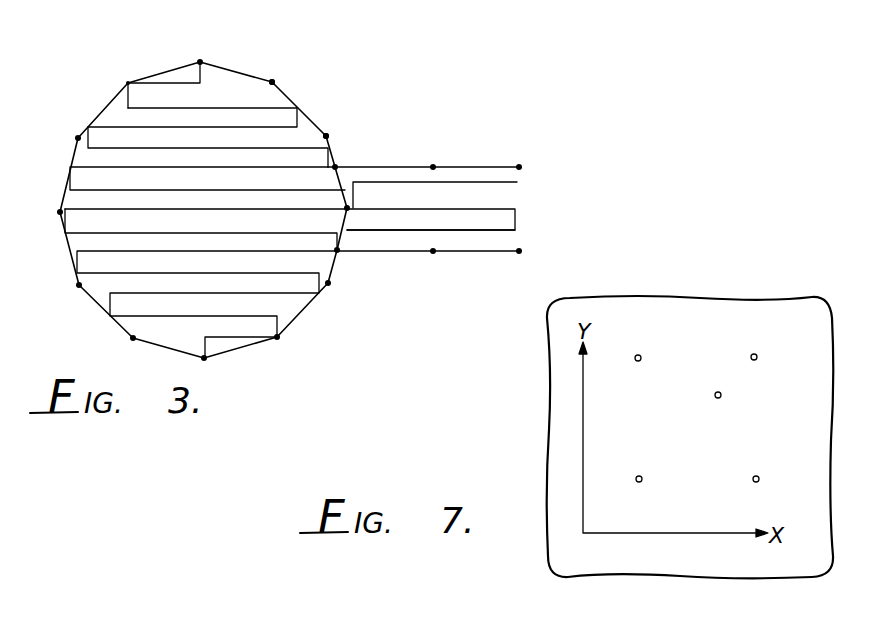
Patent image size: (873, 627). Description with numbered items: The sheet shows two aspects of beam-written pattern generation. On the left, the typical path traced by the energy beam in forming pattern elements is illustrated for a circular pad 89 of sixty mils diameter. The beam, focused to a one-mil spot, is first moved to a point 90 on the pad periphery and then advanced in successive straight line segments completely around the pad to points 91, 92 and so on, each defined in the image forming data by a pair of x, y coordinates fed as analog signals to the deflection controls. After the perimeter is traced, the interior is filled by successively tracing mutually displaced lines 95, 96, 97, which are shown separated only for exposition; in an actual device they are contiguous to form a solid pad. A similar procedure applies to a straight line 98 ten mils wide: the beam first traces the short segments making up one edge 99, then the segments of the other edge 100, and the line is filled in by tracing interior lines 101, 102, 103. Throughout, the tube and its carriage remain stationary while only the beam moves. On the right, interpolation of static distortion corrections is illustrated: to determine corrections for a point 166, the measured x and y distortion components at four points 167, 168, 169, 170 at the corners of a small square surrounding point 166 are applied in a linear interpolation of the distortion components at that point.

In FIG. 3, the circular pad 89 is at (90, 93).
In FIG. 3, the point on pad periphery 90 is at (201, 62).
In FIG. 3, the point on pad periphery 91 is at (272, 82).
In FIG. 3, the point on pad periphery 92 is at (326, 136).
In FIG. 3, the fill-in line 95 is at (168, 83).
In FIG. 3, the fill-in line 96 is at (270, 105).
In FIG. 3, the fill-in line 97 is at (108, 126).
In FIG. 3, the straight line 98 is at (323, 170).
In FIG. 3, the edge of line 99 is at (473, 167).
In FIG. 3, the other edge of line 100 is at (453, 251).
In FIG. 3, the interior line 101 is at (390, 182).
In FIG. 3, the interior line 102 is at (500, 208).
In FIG. 3, the interior line 103 is at (507, 231).
In FIG. 7, the point 166 is at (721, 394).
In FIG. 7, the corner point 167 is at (640, 355).
In FIG. 7, the corner point 168 is at (756, 354).
In FIG. 7, the corner point 169 is at (758, 482).
In FIG. 7, the corner point 170 is at (641, 482).